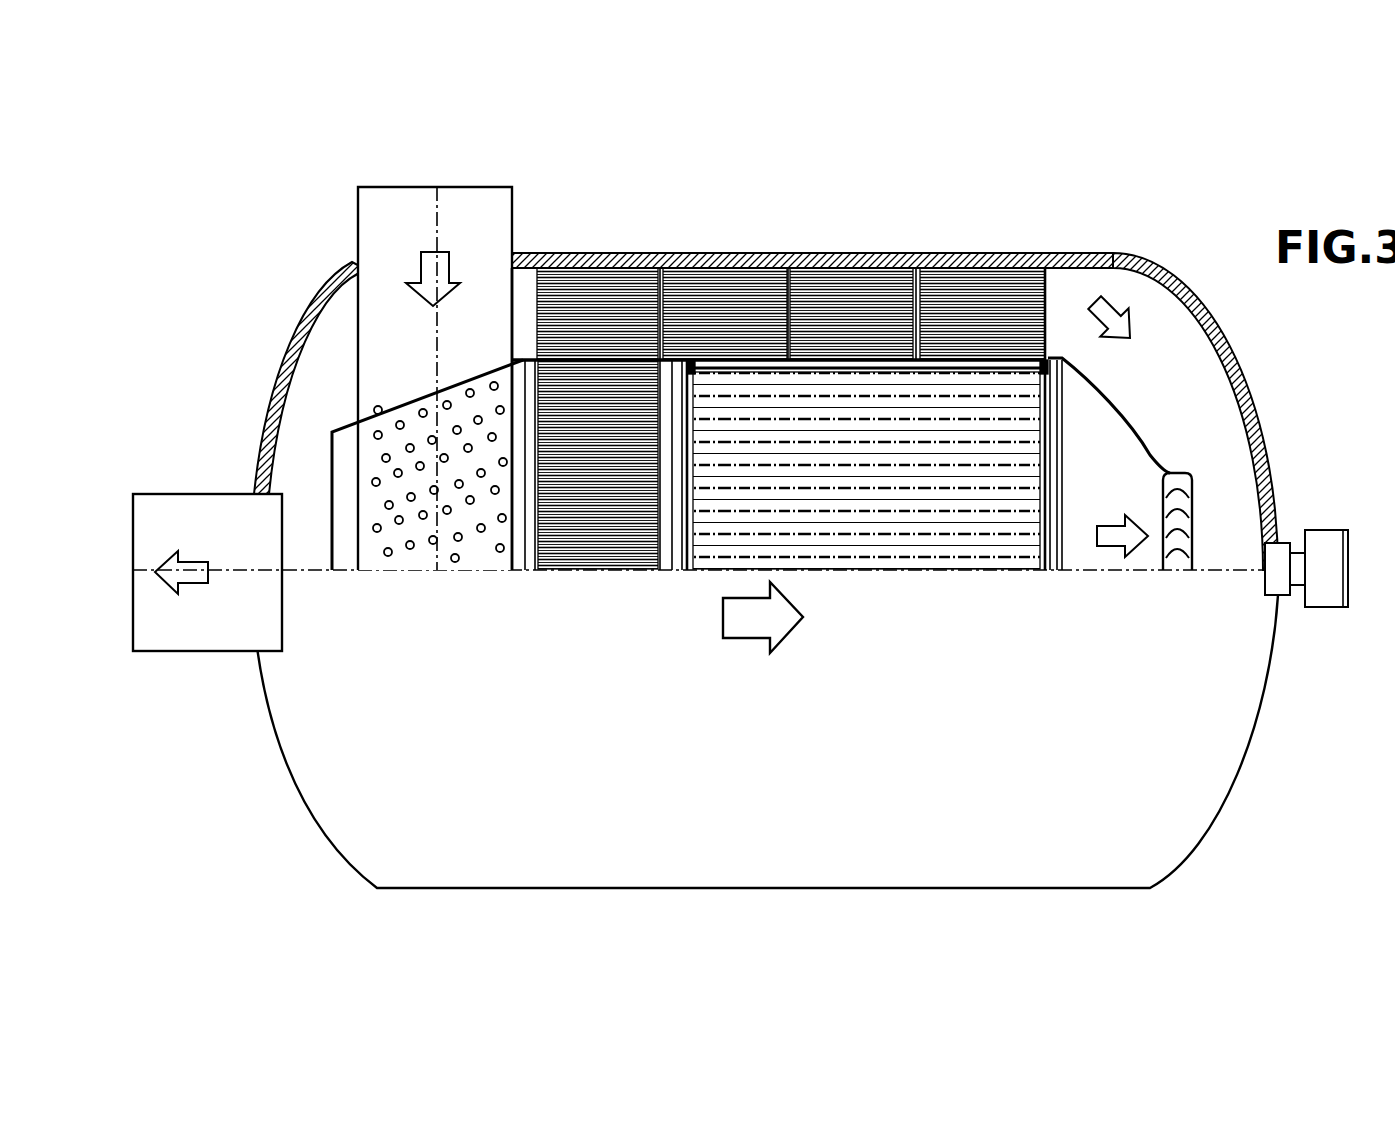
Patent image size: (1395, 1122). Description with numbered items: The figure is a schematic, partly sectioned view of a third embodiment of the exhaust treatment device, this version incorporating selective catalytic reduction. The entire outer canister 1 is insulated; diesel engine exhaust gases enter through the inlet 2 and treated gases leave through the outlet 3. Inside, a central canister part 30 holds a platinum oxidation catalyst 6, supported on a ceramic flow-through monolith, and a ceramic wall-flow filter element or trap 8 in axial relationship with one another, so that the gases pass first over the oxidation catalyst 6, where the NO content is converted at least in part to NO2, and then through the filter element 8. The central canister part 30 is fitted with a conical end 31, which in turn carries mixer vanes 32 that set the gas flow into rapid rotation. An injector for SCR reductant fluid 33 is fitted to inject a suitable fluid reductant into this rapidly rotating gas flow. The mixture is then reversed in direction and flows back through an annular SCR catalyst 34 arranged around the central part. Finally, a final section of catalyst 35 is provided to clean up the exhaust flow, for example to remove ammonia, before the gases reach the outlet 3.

The outer canister 1 is at (282, 375).
The inlet 2 is at (357, 222).
The outlet 3 is at (215, 653).
The platinum oxidation catalyst 6 is at (602, 390).
The wall-flow filter element 8 is at (815, 410).
The central canister part 30 is at (897, 353).
The conical end 31 is at (1088, 390).
The mixer vanes 32 is at (1193, 500).
The injector for SCR reductant fluid 33 is at (1270, 555).
The annular SCR catalyst 34 is at (968, 287).
The final section of catalyst 35 is at (570, 253).